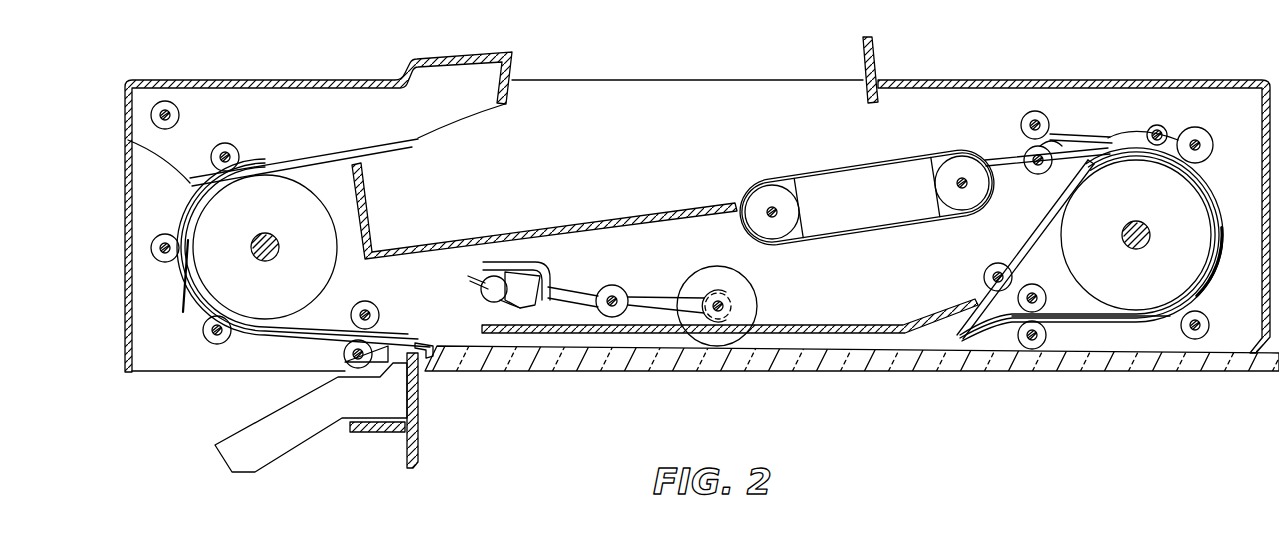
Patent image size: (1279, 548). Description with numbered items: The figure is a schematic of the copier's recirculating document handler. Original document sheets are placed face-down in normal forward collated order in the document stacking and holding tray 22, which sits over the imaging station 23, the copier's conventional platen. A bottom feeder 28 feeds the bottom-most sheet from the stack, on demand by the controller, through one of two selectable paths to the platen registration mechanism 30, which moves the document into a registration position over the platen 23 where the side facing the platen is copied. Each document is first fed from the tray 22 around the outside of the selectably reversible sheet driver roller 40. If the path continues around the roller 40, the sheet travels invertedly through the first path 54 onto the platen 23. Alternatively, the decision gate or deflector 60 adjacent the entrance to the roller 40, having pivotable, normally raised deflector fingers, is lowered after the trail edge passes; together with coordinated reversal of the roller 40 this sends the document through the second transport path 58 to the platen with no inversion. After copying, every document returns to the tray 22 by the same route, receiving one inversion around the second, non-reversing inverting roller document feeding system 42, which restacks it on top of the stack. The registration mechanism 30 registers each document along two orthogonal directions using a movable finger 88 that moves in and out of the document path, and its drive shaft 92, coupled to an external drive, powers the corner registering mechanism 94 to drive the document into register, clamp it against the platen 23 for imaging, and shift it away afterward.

The document stacking and holding tray 22 is at (477, 240).
The imaging station 23 is at (820, 378).
The bottom feeder 28 is at (874, 224).
The platen registration mechanism 30 is at (764, 287).
The sheet driver roller (inverting roller) 40 is at (1197, 205).
The inverting roller document feeding system 42 is at (268, 183).
The first path 54 is at (1083, 323).
The second transport path 58 is at (1050, 213).
The gate or deflector 60 is at (1135, 133).
The movable finger 88 is at (417, 346).
The drive shaft 92 is at (628, 290).
The corner registering mechanism 94 is at (556, 261).